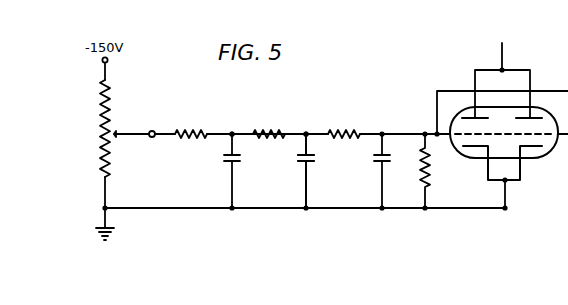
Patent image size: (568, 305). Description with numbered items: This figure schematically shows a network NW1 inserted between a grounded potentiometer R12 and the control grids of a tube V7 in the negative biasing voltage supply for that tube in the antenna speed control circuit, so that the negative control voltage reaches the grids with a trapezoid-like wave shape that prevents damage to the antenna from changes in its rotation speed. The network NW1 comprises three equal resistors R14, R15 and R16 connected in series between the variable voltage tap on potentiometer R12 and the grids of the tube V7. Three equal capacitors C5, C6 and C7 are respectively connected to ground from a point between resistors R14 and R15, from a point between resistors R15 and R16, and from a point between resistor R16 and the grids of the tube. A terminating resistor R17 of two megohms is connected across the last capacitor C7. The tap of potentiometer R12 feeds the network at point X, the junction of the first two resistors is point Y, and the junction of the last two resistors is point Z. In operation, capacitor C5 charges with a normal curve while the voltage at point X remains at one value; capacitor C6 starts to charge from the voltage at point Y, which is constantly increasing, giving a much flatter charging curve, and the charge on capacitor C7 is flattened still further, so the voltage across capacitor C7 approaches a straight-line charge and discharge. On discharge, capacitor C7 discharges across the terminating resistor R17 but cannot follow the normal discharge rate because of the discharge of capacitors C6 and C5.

The grounded potentiometer R12 is at (112, 117).
The point X is at (151, 127).
The resistor R14 is at (179, 130).
The point Y is at (230, 126).
The resistor R15 is at (257, 128).
The point Z is at (306, 126).
The network NW1 is at (289, 152).
The resistor R16 is at (334, 128).
The capacitor C5 is at (229, 162).
The capacitor C6 is at (304, 162).
The capacitor C7 is at (380, 162).
The terminating resistor R17 is at (431, 158).
The tube V7 is at (556, 118).